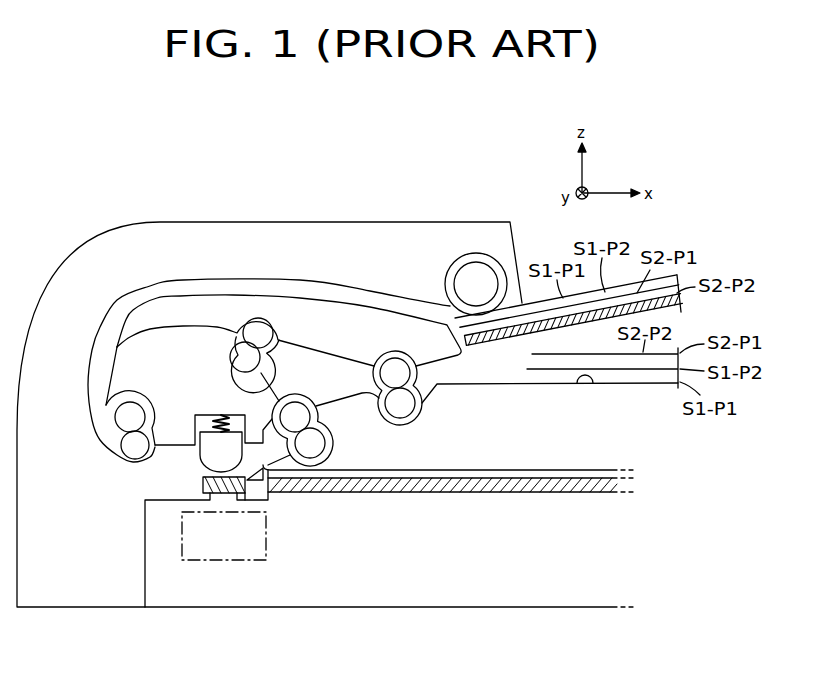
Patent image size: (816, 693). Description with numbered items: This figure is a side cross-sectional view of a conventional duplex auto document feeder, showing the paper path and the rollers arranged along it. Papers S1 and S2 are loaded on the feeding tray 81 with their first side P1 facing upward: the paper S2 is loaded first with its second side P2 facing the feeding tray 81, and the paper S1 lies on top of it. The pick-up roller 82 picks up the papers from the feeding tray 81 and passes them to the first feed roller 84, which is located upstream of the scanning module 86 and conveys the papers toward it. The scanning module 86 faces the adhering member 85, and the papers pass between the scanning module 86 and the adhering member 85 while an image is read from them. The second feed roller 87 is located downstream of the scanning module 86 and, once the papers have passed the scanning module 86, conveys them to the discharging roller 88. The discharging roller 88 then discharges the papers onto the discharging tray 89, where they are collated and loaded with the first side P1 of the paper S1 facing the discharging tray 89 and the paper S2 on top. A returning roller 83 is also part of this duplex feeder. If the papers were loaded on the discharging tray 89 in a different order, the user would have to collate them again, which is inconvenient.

The feeding tray 81 is at (681, 309).
The pick-up roller 82 is at (476, 290).
The returning roller 83 is at (258, 330).
The first feed roller 84 is at (122, 417).
The adhering member 85 is at (207, 450).
The scanning module 86 is at (222, 562).
The second feed roller 87 is at (300, 417).
The discharging roller 88 is at (403, 410).
The discharging tray 89 is at (595, 383).